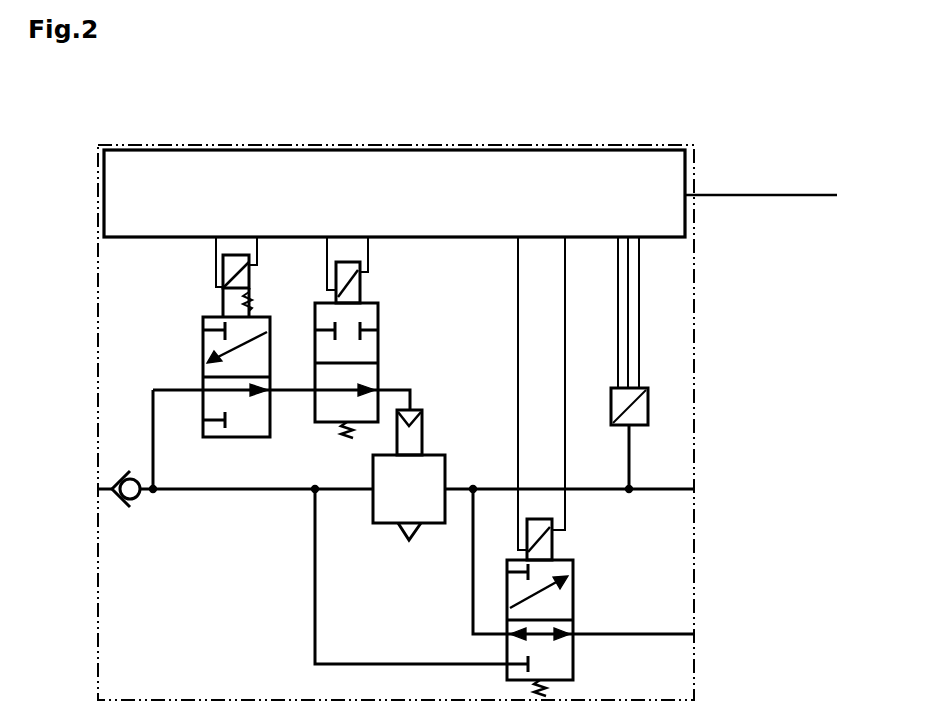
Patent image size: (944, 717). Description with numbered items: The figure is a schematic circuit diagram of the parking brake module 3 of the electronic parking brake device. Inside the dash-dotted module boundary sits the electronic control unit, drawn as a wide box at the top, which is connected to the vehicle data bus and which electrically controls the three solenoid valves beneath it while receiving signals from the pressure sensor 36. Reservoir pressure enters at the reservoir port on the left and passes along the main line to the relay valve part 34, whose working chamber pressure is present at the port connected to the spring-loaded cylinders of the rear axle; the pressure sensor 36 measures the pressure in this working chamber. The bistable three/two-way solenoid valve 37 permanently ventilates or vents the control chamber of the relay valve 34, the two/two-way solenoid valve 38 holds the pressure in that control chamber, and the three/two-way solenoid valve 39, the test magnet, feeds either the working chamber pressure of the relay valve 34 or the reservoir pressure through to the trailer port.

The parking brake module 3 is at (672, 267).
The relay valve part 34 is at (400, 490).
The pressure sensor 36 is at (640, 397).
The bistable 3/2-way solenoid valve 37 is at (205, 339).
The 2/2-way solenoid valve 38 is at (365, 352).
The 3/2-way solenoid valve 39 is at (565, 612).